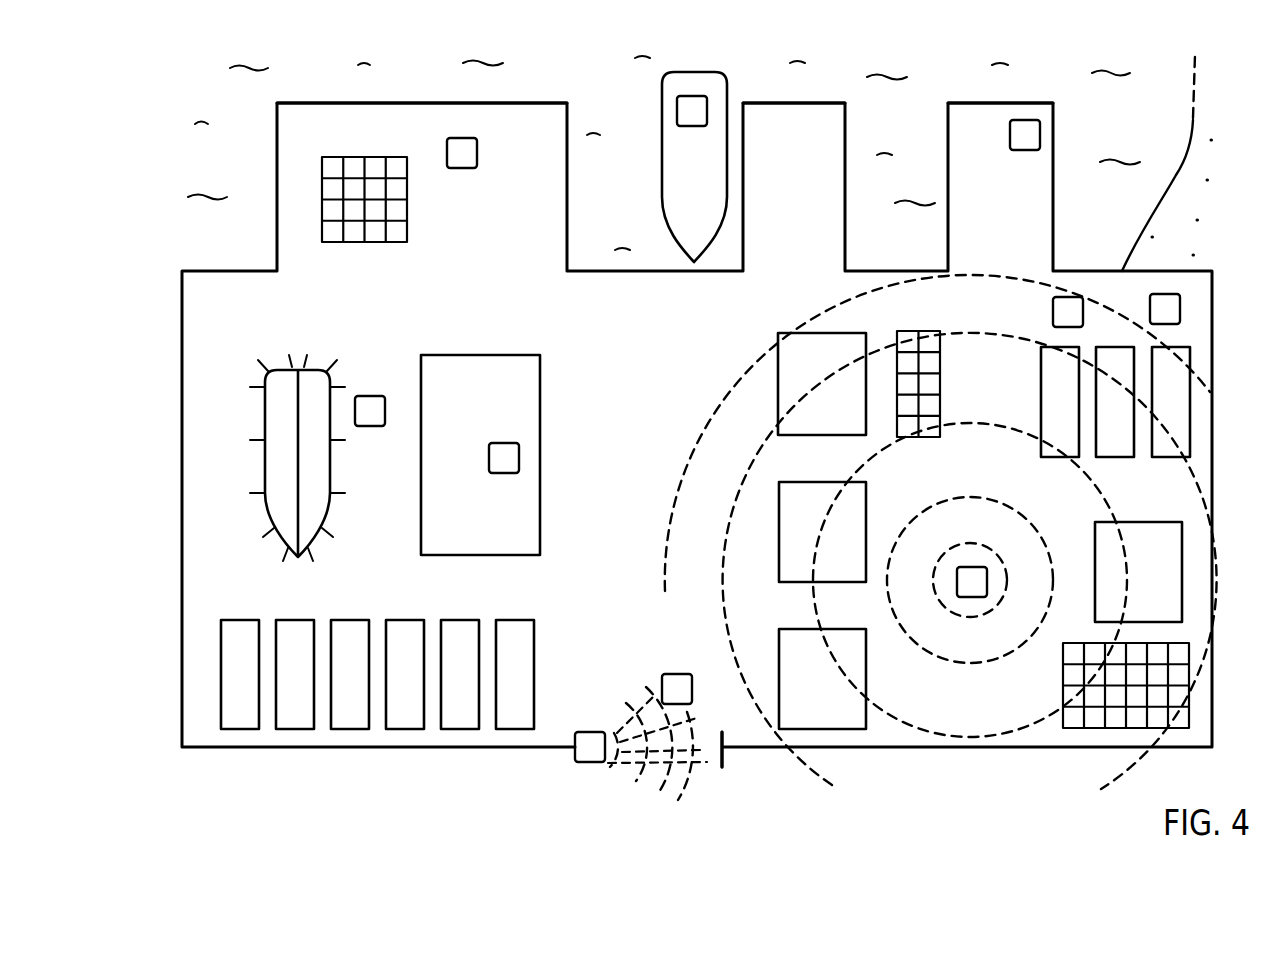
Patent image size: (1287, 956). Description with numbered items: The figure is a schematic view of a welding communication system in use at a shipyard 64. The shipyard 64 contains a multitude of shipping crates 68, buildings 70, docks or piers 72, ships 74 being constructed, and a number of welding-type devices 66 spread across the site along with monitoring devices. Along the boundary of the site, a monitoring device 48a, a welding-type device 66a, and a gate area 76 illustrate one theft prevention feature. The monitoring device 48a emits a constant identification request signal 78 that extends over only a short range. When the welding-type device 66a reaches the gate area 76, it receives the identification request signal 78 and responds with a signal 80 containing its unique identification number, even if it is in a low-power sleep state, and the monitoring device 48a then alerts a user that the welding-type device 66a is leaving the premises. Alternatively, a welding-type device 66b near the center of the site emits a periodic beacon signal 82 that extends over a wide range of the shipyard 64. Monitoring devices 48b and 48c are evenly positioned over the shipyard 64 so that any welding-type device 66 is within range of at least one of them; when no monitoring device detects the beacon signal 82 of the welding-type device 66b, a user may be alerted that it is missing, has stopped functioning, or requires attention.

The shipyard 64 is at (1237, 390).
The welding-type device 66 is at (478, 152).
The welding-type device 66a is at (680, 674).
The welding-type device 66b is at (972, 567).
The shipping crates 68 is at (372, 157).
The buildings 70 is at (482, 355).
The docks or piers 72 is at (413, 102).
The ships 74 is at (662, 157).
The gate area 76 is at (720, 797).
The identification request signal 78 is at (612, 727).
The signal 80 is at (681, 718).
The beacon signal 82 is at (738, 500).
The monitoring device 48a is at (590, 763).
The monitoring device 48b is at (1053, 313).
The monitoring device 48c is at (508, 443).